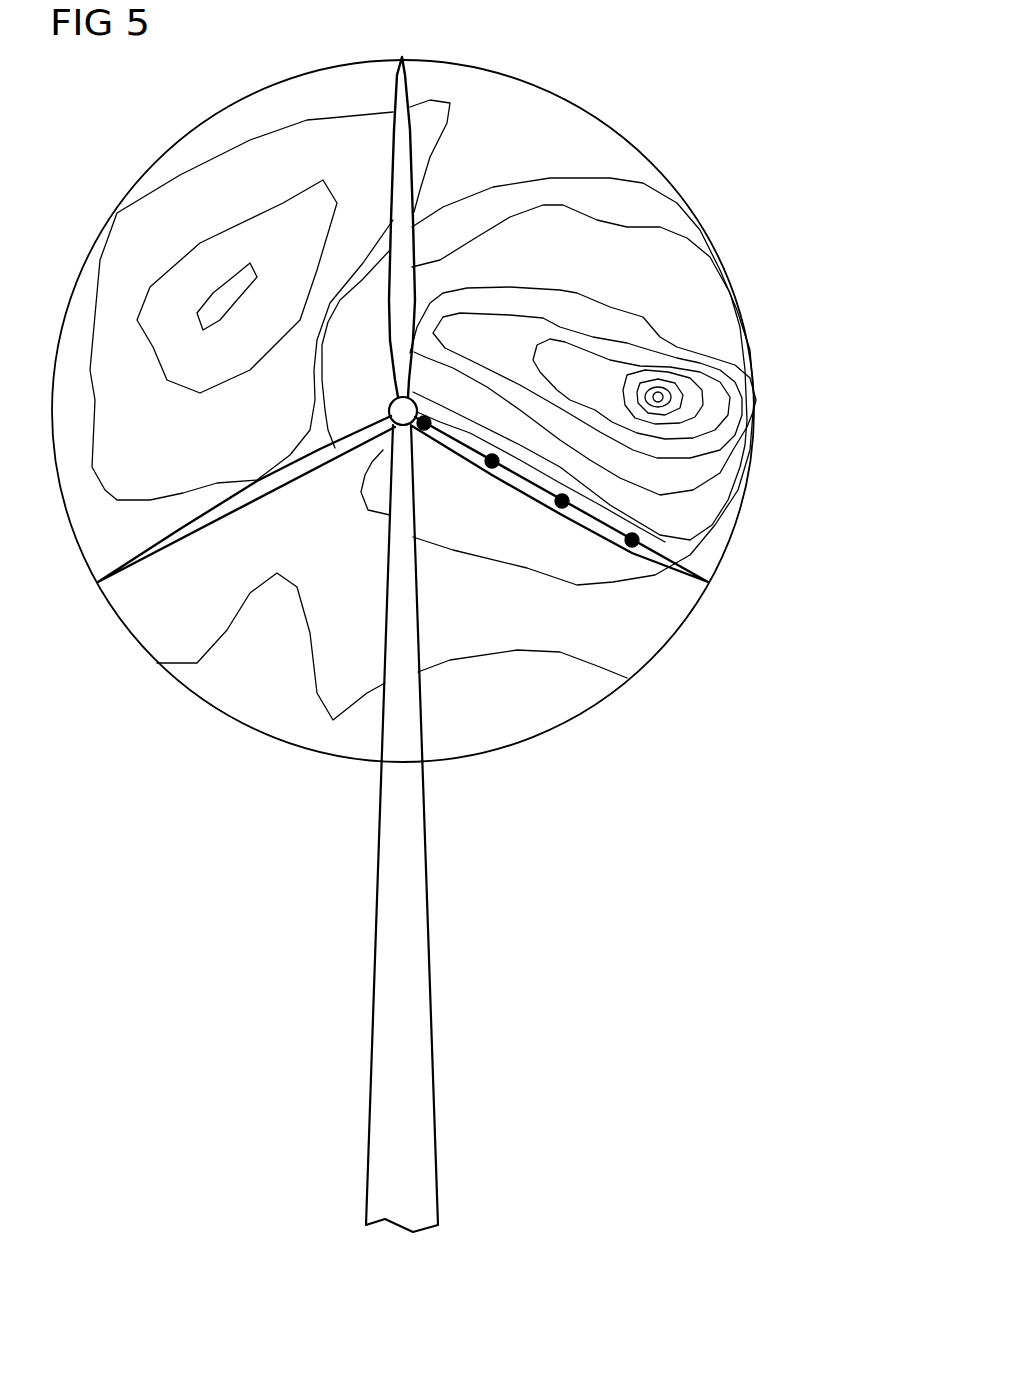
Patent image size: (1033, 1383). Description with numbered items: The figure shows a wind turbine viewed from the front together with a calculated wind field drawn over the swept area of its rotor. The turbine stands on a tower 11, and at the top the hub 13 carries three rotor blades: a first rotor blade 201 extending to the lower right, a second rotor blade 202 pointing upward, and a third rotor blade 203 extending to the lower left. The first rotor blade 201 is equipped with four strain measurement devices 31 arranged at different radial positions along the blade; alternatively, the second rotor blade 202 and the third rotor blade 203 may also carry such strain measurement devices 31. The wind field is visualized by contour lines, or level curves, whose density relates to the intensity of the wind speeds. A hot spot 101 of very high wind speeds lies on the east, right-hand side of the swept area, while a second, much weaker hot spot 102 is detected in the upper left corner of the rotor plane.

The tower 11 is at (426, 828).
The hub 13 is at (379, 454).
The strain measurement devices 31 is at (528, 528).
The hot spot 101 is at (678, 389).
The second hot spot 102 is at (210, 266).
The first rotor blade 201 is at (577, 544).
The second rotor blade 202 is at (449, 210).
The third rotor blade 203 is at (237, 539).